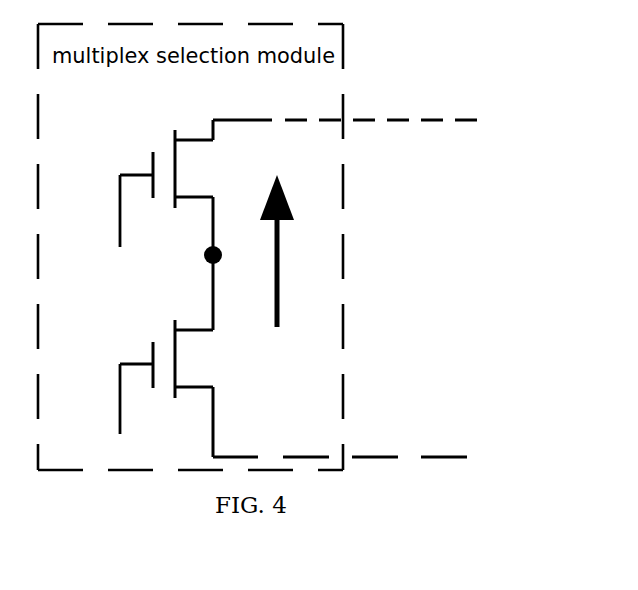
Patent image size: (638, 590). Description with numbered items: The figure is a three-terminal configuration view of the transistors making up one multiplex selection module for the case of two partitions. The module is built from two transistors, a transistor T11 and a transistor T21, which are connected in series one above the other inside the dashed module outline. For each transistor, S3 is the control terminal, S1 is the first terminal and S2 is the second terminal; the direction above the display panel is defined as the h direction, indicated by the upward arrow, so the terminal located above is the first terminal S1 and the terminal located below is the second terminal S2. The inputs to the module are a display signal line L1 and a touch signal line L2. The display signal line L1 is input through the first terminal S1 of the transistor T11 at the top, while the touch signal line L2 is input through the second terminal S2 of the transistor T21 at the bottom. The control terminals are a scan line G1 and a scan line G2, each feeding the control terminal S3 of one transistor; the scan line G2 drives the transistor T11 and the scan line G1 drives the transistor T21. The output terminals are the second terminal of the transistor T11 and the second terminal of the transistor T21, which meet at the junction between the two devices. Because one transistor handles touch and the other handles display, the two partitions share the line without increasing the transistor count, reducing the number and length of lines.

The display signal line L1 is at (345, 100).
The touch signal line L2 is at (340, 439).
The transistor T11 is at (190, 187).
The transistor T21 is at (196, 388).
The scan line G1 is at (119, 402).
The scan line G2 is at (118, 211).
The first terminal S1 is at (244, 215).
The second terminal S2 is at (250, 311).
The control terminal S3 is at (115, 238).
The h direction h is at (294, 251).